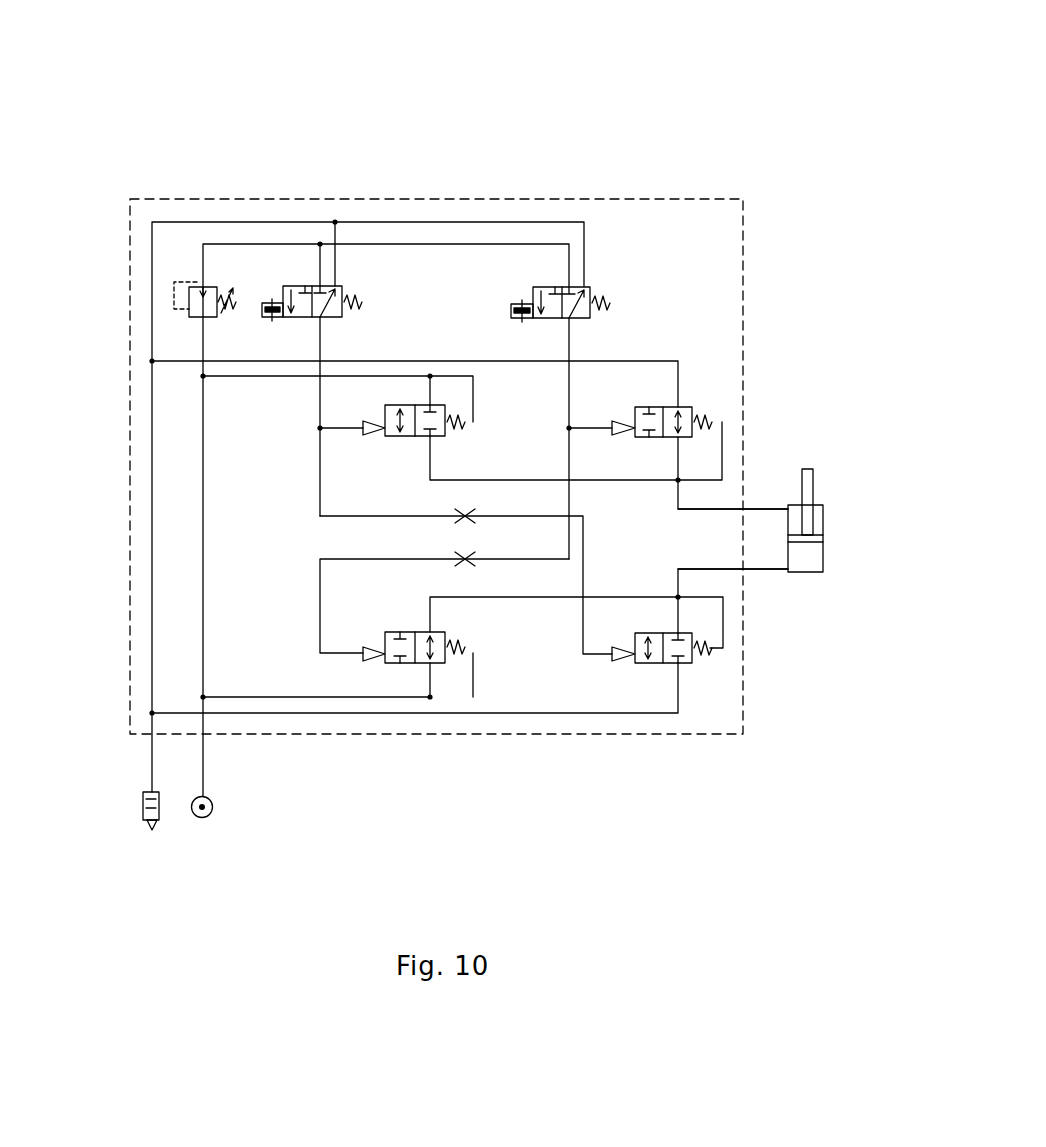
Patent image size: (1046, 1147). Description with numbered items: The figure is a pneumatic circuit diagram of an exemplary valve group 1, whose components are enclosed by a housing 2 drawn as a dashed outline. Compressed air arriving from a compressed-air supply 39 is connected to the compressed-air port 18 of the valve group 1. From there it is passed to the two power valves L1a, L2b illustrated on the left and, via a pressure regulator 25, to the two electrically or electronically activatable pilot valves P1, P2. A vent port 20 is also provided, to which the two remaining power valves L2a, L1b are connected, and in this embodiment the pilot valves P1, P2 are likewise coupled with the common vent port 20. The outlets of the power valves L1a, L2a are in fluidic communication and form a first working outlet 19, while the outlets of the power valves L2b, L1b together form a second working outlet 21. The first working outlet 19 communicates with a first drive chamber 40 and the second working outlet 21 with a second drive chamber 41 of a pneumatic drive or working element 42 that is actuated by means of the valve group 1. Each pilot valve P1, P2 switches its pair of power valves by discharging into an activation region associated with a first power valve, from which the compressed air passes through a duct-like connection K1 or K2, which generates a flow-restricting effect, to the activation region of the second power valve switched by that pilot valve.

The valve group 1 is at (218, 141).
The housing 2 is at (130, 563).
The pressure regulator 25 is at (163, 268).
The compressed-air port 18 is at (223, 745).
The first working outlet 19 is at (762, 504).
The vent port 20 is at (144, 754).
The second working outlet 21 is at (764, 577).
The compressed-air supply 39 is at (209, 815).
The first drive chamber 40 is at (818, 514).
The second drive chamber 41 is at (818, 558).
The pneumatic drive or working element 42 is at (842, 545).
The pilot valve P1 is at (304, 270).
The pilot valve P2 is at (556, 270).
The power valve L1a is at (415, 385).
The power valve L2a is at (664, 388).
The power valve L1b is at (669, 680).
The power valve L2b is at (420, 679).
The duct-like connection K1 is at (484, 532).
The duct-like connection K2 is at (479, 581).